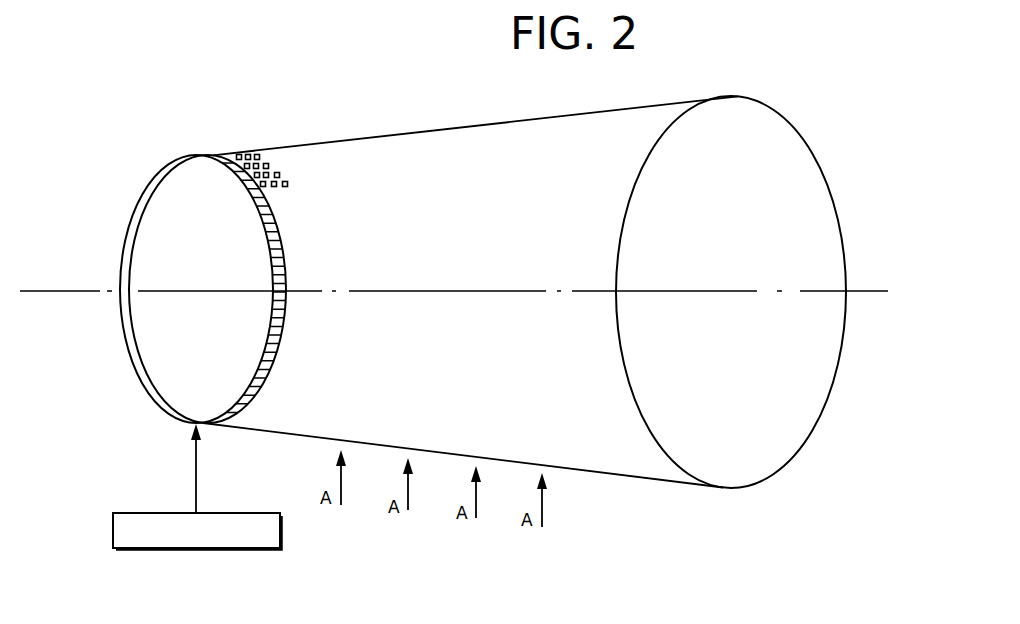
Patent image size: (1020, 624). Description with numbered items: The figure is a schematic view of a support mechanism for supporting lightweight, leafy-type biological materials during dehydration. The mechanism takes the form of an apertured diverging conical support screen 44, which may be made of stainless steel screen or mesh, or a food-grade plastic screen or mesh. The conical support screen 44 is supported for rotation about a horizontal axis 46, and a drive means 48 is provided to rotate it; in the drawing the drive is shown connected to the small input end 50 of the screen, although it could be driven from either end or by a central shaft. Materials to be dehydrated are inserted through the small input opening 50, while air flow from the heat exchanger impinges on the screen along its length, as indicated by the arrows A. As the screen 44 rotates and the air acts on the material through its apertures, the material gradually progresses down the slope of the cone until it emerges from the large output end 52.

The conical support screen 44 is at (383, 148).
The horizontal axis 46 is at (78, 292).
The drive means 48 is at (120, 549).
The input end 50 is at (148, 335).
The output end 52 is at (757, 458).